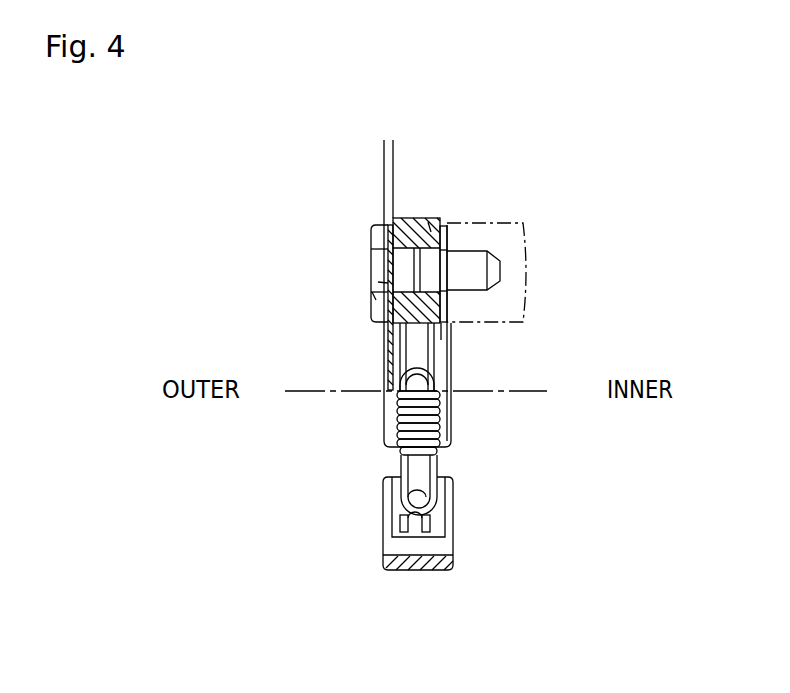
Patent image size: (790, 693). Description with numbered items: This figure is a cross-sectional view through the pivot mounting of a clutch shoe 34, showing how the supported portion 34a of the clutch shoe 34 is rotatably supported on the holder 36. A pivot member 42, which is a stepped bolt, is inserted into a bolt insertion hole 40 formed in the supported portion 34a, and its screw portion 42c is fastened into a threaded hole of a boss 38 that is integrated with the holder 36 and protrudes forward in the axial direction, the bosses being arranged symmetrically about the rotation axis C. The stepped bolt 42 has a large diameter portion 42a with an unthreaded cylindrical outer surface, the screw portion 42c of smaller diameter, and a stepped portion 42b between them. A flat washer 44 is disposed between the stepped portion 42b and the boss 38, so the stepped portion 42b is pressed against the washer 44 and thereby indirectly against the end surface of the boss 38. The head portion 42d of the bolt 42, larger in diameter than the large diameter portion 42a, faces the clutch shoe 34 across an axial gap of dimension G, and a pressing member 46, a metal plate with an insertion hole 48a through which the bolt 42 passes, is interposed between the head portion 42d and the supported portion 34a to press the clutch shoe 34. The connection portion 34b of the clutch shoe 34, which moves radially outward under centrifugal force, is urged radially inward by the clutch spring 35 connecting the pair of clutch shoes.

The clutch shoe 34 is at (370, 512).
The supported portion 34a is at (427, 222).
The connection portion 34b is at (420, 570).
The clutch spring 35 is at (440, 455).
The holder 36 is at (543, 262).
The boss 38 is at (523, 223).
The bolt insertion hole 40 is at (372, 257).
The pivot member 42 is at (352, 220).
The large diameter portion 42a is at (410, 222).
The stepped portion 42b is at (447, 282).
The screw portion 42c is at (478, 268).
The head portion 42d is at (372, 292).
The flat washer 44 is at (447, 243).
The pressing member 46 is at (388, 343).
The insertion hole 48a is at (378, 282).
The rotation axis C is at (528, 391).
The gap dimension G is at (414, 153).